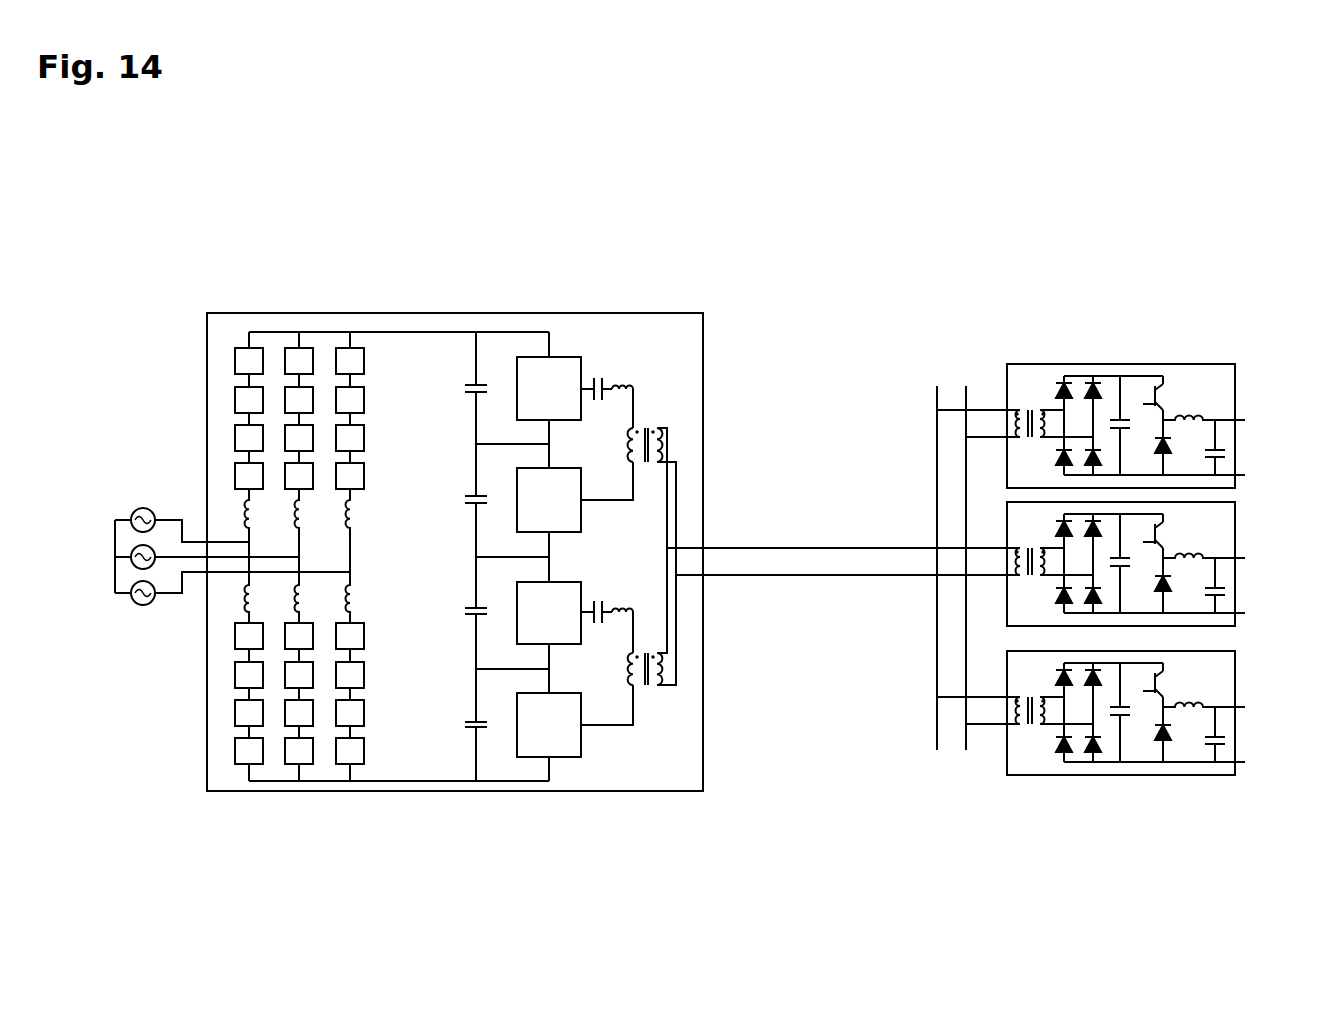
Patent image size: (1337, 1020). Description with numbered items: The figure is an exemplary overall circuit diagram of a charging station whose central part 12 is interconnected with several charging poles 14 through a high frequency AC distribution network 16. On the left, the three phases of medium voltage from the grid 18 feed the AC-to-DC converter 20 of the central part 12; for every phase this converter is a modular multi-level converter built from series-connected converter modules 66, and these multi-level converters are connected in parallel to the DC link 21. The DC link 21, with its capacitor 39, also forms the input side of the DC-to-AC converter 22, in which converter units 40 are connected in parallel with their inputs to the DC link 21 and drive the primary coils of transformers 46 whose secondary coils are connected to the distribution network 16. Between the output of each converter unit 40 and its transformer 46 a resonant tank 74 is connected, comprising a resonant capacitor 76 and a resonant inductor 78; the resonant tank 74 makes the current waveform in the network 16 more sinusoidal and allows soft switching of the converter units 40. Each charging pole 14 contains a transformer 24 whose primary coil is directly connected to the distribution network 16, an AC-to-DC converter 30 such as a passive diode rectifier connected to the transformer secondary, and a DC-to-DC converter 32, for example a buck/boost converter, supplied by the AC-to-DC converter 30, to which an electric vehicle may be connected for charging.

The central part 12 is at (302, 793).
The charging pole 14 is at (1108, 566).
The high frequency AC distribution network 16 is at (934, 583).
The grid 18 is at (112, 495).
The AC-to-DC converter 20 is at (341, 487).
The DC link 21 is at (480, 489).
The DC-to-AC converter 22 is at (799, 443).
The transformer 24 is at (1027, 403).
The AC-to-DC converter 30 is at (1128, 322).
The DC-to-DC converter 32 is at (1243, 322).
The capacitor 39 is at (466, 385).
The converter unit 40 is at (516, 404).
The transformer 46 is at (650, 413).
The converter module 66 is at (235, 360).
The resonant tank 74 is at (680, 489).
The resonant capacitor 76 is at (606, 378).
The resonant inductor 78 is at (632, 383).